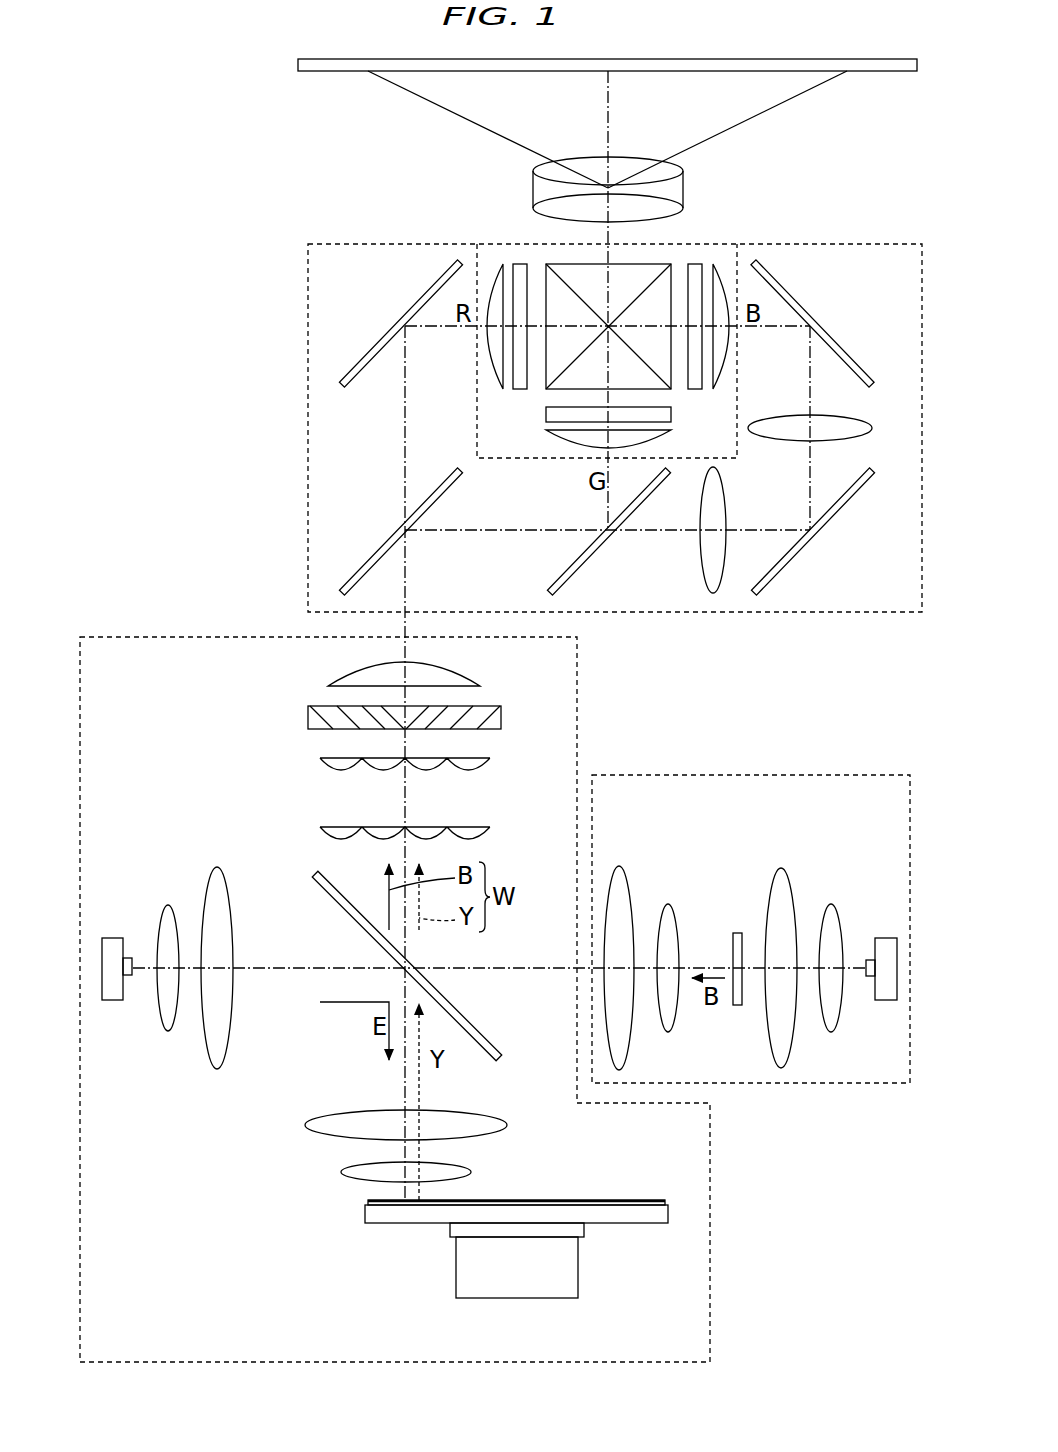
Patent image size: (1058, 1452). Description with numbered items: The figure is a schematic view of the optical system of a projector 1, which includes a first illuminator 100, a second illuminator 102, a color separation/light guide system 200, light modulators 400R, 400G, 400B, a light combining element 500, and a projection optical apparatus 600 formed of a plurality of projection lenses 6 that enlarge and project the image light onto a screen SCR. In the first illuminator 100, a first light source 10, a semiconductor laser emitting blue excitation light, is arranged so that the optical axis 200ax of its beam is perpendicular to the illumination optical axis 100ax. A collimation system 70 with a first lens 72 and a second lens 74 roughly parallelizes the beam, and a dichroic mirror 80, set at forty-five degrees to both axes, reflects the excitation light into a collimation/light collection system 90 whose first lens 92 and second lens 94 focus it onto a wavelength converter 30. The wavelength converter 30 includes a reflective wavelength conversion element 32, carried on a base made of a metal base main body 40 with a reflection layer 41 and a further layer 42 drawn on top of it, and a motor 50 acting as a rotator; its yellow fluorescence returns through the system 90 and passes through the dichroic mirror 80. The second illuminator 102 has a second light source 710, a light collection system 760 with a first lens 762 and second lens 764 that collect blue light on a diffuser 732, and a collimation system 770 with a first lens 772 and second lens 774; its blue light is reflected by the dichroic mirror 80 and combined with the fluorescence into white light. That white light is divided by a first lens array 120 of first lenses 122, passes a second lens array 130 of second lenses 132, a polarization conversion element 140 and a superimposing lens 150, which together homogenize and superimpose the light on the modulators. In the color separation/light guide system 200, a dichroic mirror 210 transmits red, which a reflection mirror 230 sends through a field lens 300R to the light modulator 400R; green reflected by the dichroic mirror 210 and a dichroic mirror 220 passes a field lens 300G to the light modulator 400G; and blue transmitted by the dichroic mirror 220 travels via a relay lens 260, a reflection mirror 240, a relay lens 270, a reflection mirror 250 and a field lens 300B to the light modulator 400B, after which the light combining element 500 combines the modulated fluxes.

The projector 1 is at (258, 158).
The projection lens 6 is at (590, 166).
The screen SCR is at (887, 72).
The projection optical apparatus 600 is at (533, 187).
The light combining element 500 is at (668, 266).
The light modulator 400R is at (520, 264).
The light modulator 400G is at (546, 414).
The light modulator 400B is at (695, 264).
The field lens 300R is at (492, 264).
The field lens 300G is at (546, 436).
The field lens 300B is at (725, 264).
The reflection mirror 230 is at (345, 378).
The reflection mirror 250 is at (870, 378).
The relay lens 270 is at (835, 418).
The dichroic mirror 210 is at (365, 562).
The dichroic mirror 220 is at (590, 560).
The relay lens 260 is at (700, 550).
The reflection mirror 240 is at (838, 520).
The color separation/light guide system 200 is at (865, 612).
The first illuminator 100 is at (710, 1277).
The illumination optical axis 100ax is at (402, 628).
The superimposing lens 150 is at (482, 672).
The polarization conversion element 140 is at (501, 706).
The second lens array 130 is at (490, 762).
The second lens 132 is at (328, 764).
The first lens array 120 is at (490, 832).
The first lens 122 is at (328, 833).
The collimation system 70 is at (232, 803).
The first lens 72 is at (170, 903).
The second lens 74 is at (219, 866).
The first light source 10 is at (134, 930).
The dichroic mirror 80 is at (487, 1033).
The optical axis 200ax is at (285, 970).
The collimation/light collection system 90 is at (236, 1140).
The second lens 94 is at (310, 1135).
The first lens 92 is at (345, 1178).
The wavelength conversion element 32 is at (592, 1194).
The reflective layer 42 is at (665, 1200).
The reflection layer 41 is at (665, 1204).
The base main body 40 is at (668, 1215).
The motor 50 is at (565, 1273).
The wavelength converter 30 is at (430, 1252).
The second illuminator 102 is at (862, 1083).
The collimation system 770 is at (710, 828).
The second lens 774 is at (628, 880).
The first lens 772 is at (672, 904).
The diffuser 732 is at (737, 933).
The light collection system 760 is at (872, 828).
The second lens 764 is at (790, 880).
The first lens 762 is at (838, 904).
The second light source 710 is at (861, 936).